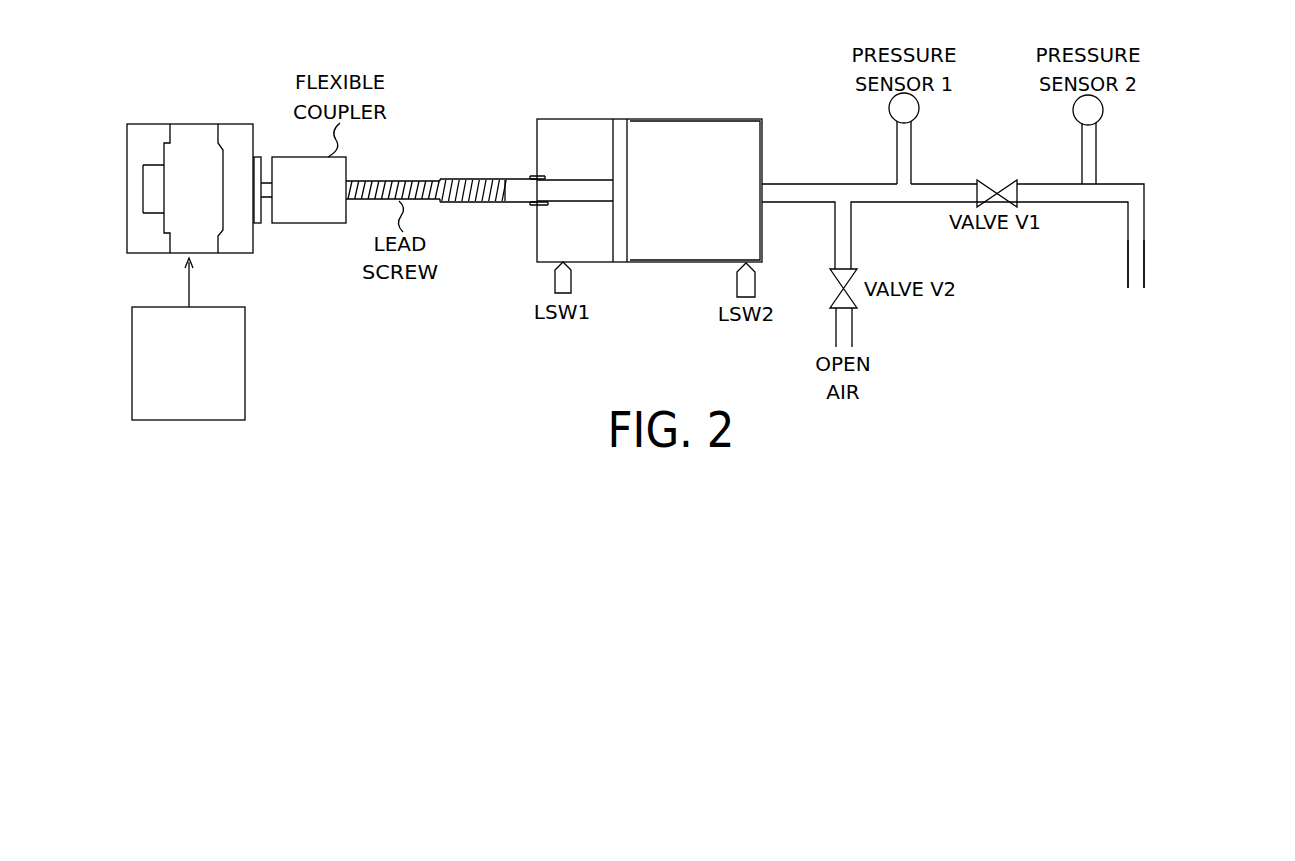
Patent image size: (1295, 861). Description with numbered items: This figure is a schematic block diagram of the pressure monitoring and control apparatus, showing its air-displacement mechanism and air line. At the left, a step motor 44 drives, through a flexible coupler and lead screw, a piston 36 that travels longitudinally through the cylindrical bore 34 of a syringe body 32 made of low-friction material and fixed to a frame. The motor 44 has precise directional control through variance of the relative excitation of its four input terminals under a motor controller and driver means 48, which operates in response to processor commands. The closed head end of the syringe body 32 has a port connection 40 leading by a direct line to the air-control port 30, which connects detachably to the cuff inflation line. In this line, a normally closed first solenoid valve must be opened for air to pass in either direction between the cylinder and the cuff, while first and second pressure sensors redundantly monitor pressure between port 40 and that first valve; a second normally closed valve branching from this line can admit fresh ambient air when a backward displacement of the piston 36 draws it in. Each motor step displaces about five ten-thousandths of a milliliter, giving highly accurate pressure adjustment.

The air-control port 30 is at (1128, 271).
The syringe body 32 is at (557, 119).
The cylindrical bore 34 is at (735, 124).
The piston 36 is at (550, 196).
The port connection 40 is at (780, 186).
The step motor 44 is at (127, 140).
The motor controller and driver means 48 is at (132, 323).